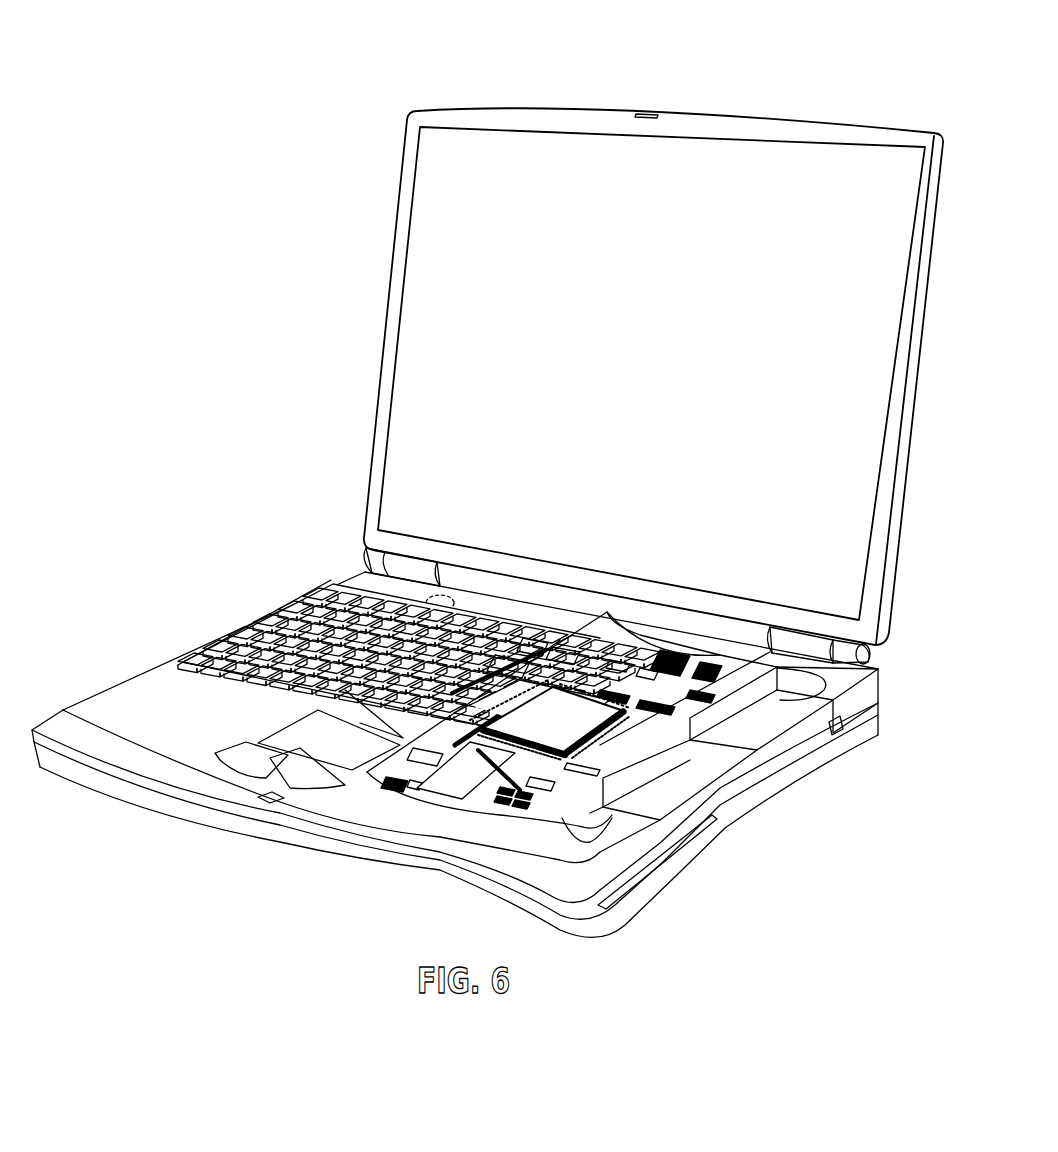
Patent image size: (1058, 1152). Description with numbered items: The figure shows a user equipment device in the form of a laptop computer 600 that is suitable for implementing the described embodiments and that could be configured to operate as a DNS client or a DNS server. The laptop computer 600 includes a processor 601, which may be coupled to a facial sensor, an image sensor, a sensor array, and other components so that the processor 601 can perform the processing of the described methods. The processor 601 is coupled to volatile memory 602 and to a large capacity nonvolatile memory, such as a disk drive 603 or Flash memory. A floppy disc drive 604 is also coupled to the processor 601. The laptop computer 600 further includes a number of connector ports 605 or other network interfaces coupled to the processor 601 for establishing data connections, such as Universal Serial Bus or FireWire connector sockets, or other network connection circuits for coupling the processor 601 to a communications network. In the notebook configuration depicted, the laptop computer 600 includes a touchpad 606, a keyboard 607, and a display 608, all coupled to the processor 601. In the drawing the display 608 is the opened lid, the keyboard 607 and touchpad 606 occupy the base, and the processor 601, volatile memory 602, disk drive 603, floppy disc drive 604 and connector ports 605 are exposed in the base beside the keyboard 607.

The laptop computer 600 is at (832, 102).
The processor 601 is at (561, 731).
The volatile memory 602 is at (473, 778).
The disk drive 603 is at (607, 822).
The floppy disc drive 604 is at (687, 765).
The connector ports 605 is at (763, 702).
The touchpad 606 is at (290, 737).
The keyboard 607 is at (240, 640).
The display 608 is at (870, 570).